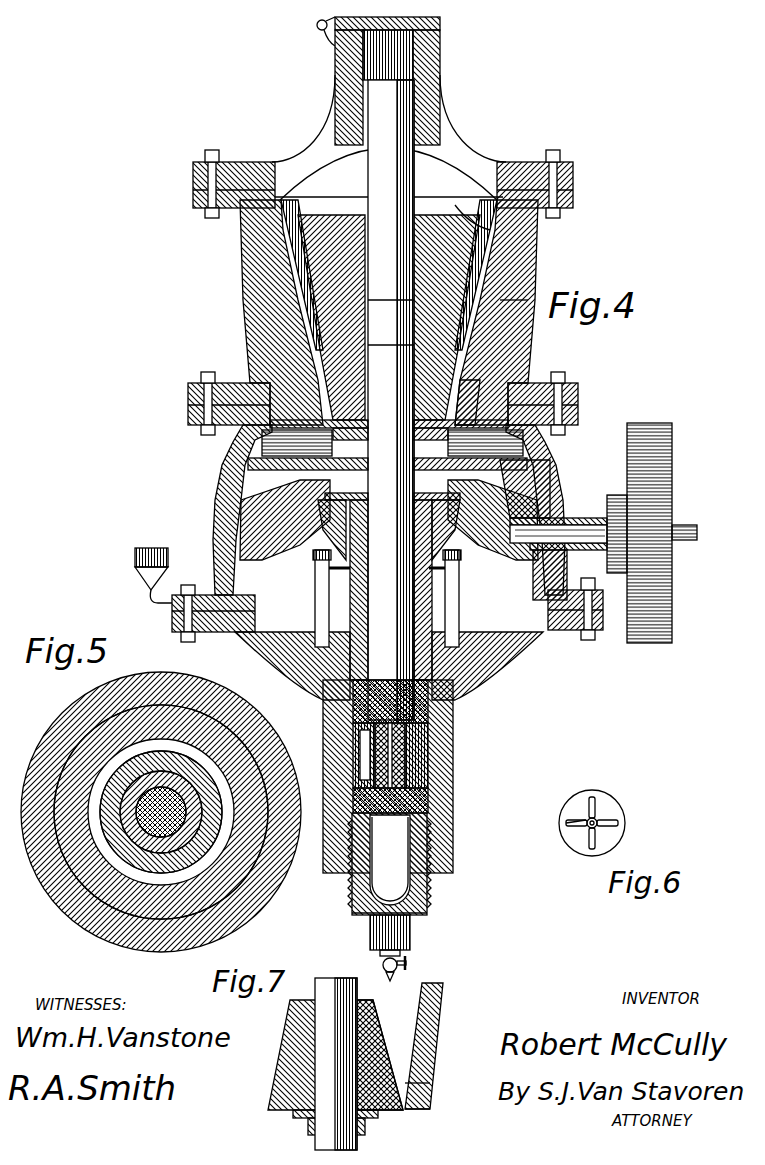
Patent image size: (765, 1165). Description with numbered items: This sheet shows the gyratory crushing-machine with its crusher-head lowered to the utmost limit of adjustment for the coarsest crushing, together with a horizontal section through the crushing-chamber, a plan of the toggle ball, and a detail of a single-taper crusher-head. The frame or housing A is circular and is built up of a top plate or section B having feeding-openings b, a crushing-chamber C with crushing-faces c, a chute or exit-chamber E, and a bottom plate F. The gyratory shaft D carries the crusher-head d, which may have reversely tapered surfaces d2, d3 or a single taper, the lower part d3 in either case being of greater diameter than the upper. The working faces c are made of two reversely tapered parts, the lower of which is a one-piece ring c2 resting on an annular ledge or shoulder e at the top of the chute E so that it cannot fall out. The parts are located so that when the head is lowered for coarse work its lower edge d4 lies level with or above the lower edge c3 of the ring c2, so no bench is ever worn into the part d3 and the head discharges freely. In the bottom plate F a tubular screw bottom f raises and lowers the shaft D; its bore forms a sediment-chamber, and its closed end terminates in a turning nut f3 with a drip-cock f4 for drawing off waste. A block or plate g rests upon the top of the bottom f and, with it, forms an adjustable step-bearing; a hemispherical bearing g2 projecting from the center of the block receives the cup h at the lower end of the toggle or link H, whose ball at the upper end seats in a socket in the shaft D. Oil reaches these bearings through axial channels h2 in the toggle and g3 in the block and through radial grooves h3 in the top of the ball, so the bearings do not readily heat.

In FIG. 4, the frame or housing A is at (383, 287).
In FIG. 4, the top plate or section B is at (262, 136).
In FIG. 4, the feeding-openings b is at (389, 119).
In FIG. 4, the crushing-chamber C is at (503, 312).
In FIG. 5, the crushing-chamber C is at (158, 812).
In FIG. 4, the crushing-faces c is at (490, 325).
In FIG. 4, the ring working-face part c2 is at (473, 382).
In FIG. 5, the ring working-face part c2 is at (72, 868).
In FIG. 7, the ring working-face part c2 is at (410, 1083).
In FIG. 4, the lower edge of working faces c3 is at (387, 450).
In FIG. 7, the lower edge of working faces c3 is at (418, 1112).
In FIG. 4, the gyratory shaft D is at (391, 400).
In FIG. 5, the gyratory shaft D is at (170, 835).
In FIG. 7, the gyratory shaft D is at (336, 1064).
In FIG. 4, the crusher-head d is at (389, 317).
In FIG. 5, the crusher-head d is at (161, 812).
In FIG. 7, the crusher-head d is at (335, 1055).
In FIG. 4, the upper tapered surface of crusher-head d2 is at (330, 230).
In FIG. 4, the lower tapered part of crusher-head d3 is at (383, 403).
In FIG. 4, the lower edge of crusher-head d4 is at (389, 438).
In FIG. 7, the lower edge of crusher-head d4 is at (392, 1112).
In FIG. 4, the chute or exit-chamber E is at (384, 510).
In FIG. 4, the annular ledge or shoulder e is at (528, 440).
In FIG. 4, the bottom plate F is at (416, 561).
In FIG. 4, the adjustable or screw bottom f is at (338, 905).
In FIG. 4, the turning nut f3 is at (399, 932).
In FIG. 4, the drip-cock f4 is at (395, 968).
In FIG. 4, the block or plate g is at (389, 864).
In FIG. 4, the hemispherical bearing g2 is at (352, 782).
In FIG. 4, the axial oil-channel of block g3 is at (352, 835).
In FIG. 4, the toggle or link H is at (400, 744).
In FIG. 6, the toggle or link H is at (609, 823).
In FIG. 4, the cup or socket h is at (402, 770).
In FIG. 4, the axial oil-channel of toggle h2 is at (352, 738).
In FIG. 6, the axial oil-channel of toggle h2 is at (596, 820).
In FIG. 6, the radial grooves or channels h3 is at (568, 826).